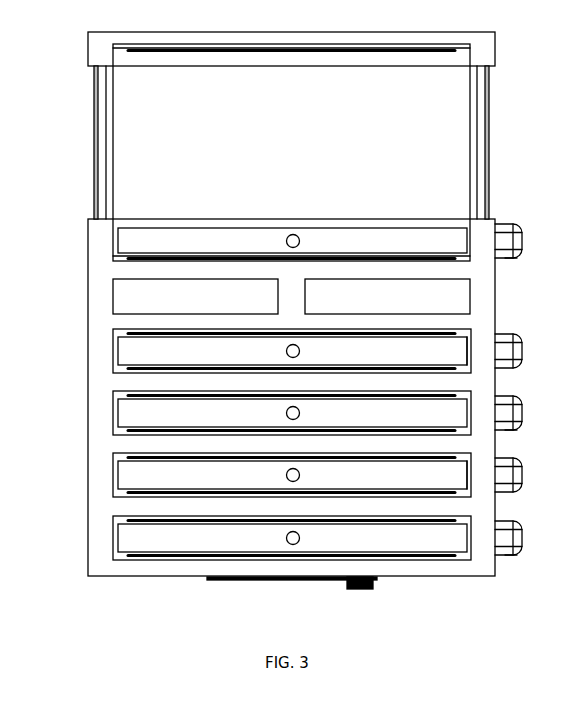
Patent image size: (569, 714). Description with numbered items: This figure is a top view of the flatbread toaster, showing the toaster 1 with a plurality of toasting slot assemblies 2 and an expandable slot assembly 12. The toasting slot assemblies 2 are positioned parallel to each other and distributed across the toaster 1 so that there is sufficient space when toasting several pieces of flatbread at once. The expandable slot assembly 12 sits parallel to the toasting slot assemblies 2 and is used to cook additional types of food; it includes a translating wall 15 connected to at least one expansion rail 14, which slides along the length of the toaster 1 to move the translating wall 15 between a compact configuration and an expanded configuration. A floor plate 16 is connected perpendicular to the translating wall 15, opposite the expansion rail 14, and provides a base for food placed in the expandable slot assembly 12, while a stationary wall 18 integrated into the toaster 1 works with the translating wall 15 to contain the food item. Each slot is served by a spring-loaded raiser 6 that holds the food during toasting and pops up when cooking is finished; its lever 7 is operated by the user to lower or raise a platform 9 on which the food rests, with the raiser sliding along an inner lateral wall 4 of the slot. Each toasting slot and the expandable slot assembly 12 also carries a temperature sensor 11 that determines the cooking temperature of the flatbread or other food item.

The toaster 1 is at (80, 566).
The toasting slot assemblies 2 is at (112, 351).
The inner lateral wall 4 is at (472, 346).
The spring-loaded raiser 6 is at (525, 242).
The lever 7 is at (515, 259).
The platform 9 is at (366, 250).
The temperature sensor 11 is at (286, 241).
The expandable slot assembly 12 is at (497, 147).
The expansion rail 14 is at (96, 139).
The translating wall 15 is at (300, 33).
The floor plate 16 is at (300, 149).
The stationary wall 18 is at (281, 262).